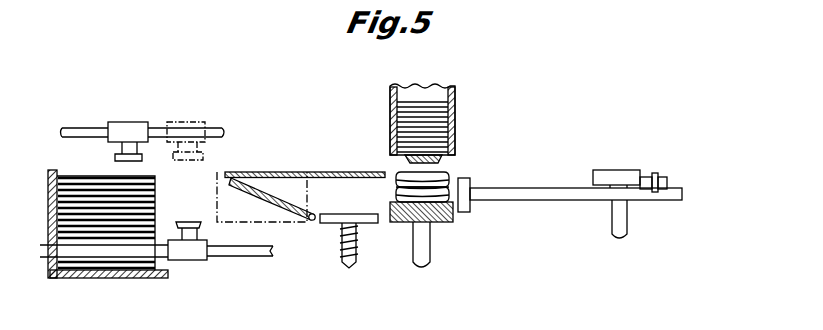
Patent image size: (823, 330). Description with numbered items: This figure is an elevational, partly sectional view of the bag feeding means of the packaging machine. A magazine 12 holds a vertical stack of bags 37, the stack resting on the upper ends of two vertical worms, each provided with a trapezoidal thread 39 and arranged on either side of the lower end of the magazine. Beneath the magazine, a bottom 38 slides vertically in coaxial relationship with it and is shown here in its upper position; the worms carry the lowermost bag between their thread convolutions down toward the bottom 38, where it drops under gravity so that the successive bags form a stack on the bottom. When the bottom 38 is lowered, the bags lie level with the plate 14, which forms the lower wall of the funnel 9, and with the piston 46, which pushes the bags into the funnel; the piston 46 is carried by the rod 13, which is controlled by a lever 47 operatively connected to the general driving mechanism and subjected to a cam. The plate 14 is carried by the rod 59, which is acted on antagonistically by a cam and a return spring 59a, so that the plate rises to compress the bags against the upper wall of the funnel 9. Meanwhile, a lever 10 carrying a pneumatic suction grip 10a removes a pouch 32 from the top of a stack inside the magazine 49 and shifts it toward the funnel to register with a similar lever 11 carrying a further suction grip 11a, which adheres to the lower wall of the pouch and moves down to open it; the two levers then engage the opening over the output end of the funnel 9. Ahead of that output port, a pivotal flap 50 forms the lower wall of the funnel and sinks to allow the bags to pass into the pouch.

The lever 10 is at (136, 122).
The suction grip 10a is at (116, 158).
The magazine 49 is at (146, 279).
The lever 11 is at (199, 261).
The pneumatic suction grip 11a is at (197, 228).
The pouch 32 is at (224, 201).
The funnel 9 is at (320, 172).
The pivotal flap 50 is at (272, 196).
The plate 14 is at (325, 224).
The rod 59 is at (352, 265).
The return spring 59a is at (357, 239).
The magazine 12 is at (388, 98).
The bags 37 is at (433, 121).
The trapezoidal thread 39 is at (441, 161).
The bottom 38 is at (447, 219).
The piston 46 is at (470, 181).
The rod 13 is at (546, 193).
The lever 47 is at (644, 182).